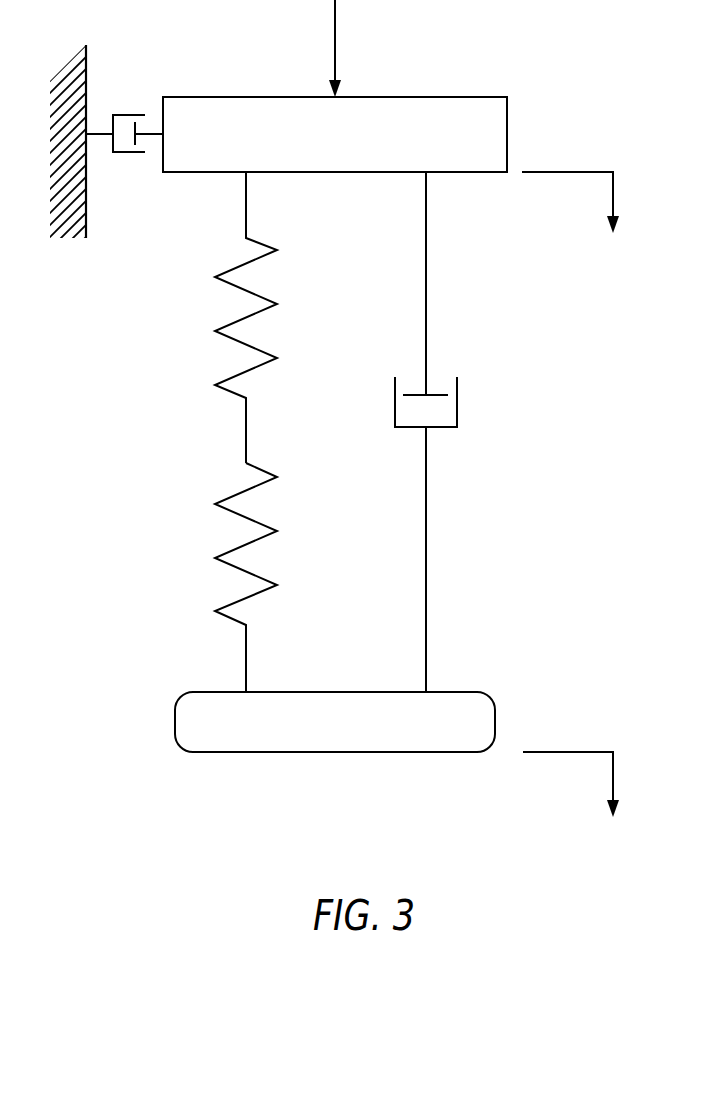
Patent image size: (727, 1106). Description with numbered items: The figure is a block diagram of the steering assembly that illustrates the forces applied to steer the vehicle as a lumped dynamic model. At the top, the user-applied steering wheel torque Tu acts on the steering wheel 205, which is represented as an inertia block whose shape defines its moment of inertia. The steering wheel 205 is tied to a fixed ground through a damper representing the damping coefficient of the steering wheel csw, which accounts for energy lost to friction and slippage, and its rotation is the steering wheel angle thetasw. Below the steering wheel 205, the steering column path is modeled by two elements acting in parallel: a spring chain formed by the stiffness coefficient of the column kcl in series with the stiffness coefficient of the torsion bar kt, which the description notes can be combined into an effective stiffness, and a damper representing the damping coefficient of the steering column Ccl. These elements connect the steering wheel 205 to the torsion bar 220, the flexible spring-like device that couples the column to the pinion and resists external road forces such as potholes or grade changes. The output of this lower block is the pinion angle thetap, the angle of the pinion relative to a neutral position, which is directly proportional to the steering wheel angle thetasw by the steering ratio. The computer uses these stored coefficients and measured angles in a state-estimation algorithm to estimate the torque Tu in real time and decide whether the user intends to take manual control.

The steering wheel 205 is at (507, 113).
The torsion bar 220 is at (495, 712).
The user-applied steering wheel torque Tu is at (352, 48).
The damping coefficient of the steering wheel csw is at (124, 158).
The steering wheel angle thetasw is at (595, 204).
The stiffness coefficient of the column kcl is at (266, 317).
The stiffness coefficient of the torsion bar kt is at (262, 577).
The damping coefficient of the steering column Ccl is at (450, 432).
The pinion angle thetap is at (588, 784).